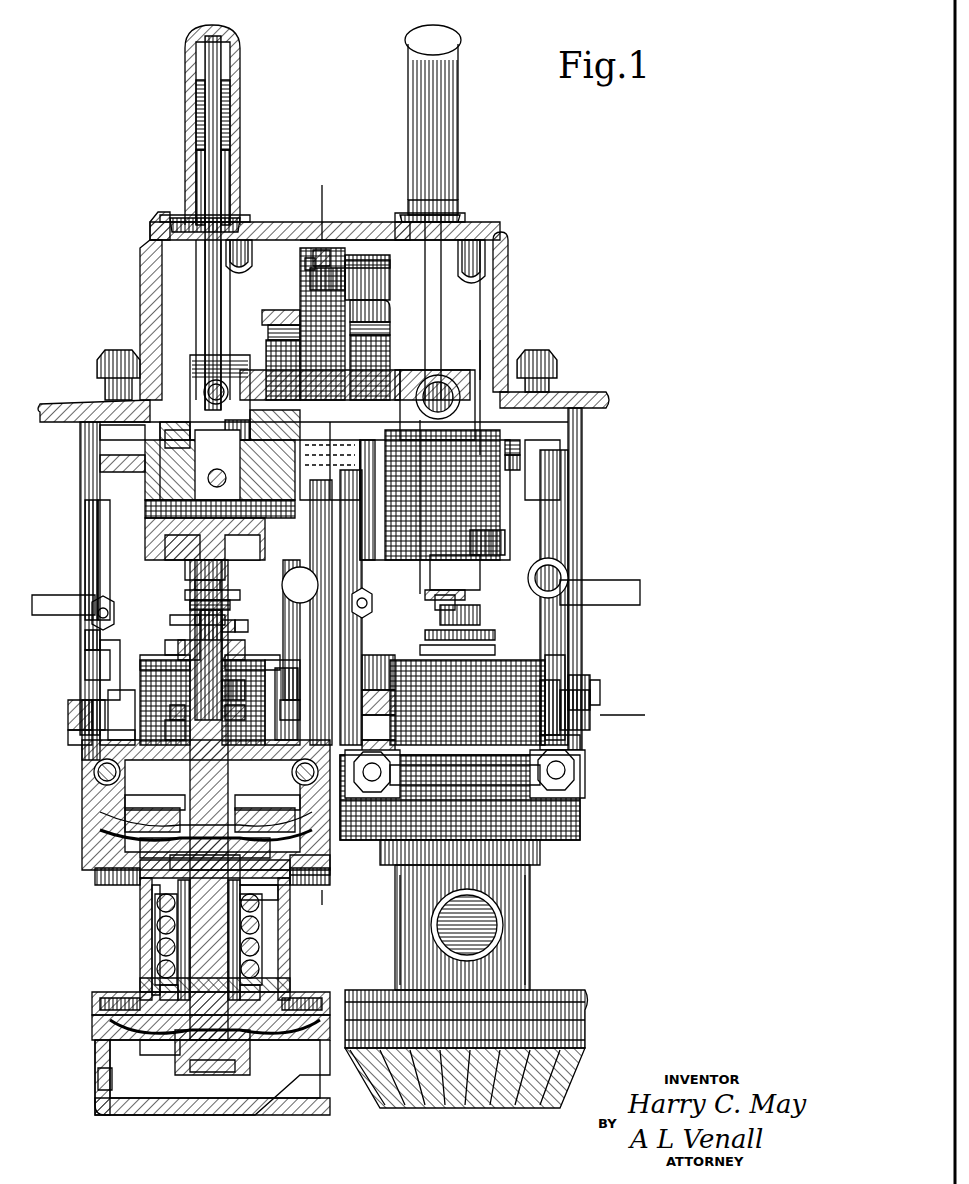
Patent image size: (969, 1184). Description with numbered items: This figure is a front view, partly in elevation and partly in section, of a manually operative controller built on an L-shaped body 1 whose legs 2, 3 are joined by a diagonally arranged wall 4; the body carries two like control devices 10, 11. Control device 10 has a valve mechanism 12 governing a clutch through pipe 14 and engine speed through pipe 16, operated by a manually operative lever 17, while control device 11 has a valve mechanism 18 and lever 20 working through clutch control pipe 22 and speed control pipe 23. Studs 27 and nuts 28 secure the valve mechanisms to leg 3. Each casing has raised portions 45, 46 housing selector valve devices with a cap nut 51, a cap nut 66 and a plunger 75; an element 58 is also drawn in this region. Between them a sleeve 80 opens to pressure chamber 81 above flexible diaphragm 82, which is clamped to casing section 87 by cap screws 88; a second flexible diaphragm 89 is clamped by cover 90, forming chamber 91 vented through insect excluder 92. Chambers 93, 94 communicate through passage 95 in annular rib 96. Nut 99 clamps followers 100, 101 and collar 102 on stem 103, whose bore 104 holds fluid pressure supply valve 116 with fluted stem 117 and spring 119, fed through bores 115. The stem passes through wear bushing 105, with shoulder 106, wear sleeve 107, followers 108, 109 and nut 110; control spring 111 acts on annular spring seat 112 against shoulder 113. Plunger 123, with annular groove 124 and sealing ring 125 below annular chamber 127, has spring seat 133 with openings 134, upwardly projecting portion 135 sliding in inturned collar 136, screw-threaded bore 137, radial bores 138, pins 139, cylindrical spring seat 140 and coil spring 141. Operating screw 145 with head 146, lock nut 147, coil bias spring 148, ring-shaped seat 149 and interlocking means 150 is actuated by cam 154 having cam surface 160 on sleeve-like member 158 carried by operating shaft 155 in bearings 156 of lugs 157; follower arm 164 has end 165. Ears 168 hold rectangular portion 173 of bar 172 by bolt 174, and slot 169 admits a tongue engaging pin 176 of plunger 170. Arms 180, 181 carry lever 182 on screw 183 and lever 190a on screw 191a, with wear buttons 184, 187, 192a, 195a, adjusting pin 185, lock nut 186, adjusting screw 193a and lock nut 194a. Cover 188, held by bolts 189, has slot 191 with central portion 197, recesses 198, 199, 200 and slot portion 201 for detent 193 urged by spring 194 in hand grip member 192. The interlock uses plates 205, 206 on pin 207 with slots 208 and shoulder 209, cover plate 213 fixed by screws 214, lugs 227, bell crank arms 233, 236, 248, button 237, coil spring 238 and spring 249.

The body 1 is at (580, 442).
The leg 2 is at (305, 189).
The leg 3 is at (80, 440).
The diagonally arranged wall 4 is at (475, 344).
The control device 10 is at (100, 668).
The control device 11 is at (560, 662).
The valve mechanism 12 is at (84, 798).
The pipe 14 is at (50, 745).
The pipe 16 is at (32, 600).
The manually operative lever 17 is at (185, 38).
The valve mechanism 18 is at (565, 793).
The lever 20 is at (462, 44).
The clutch control pipe 22 is at (648, 728).
The speed control pipe 23 is at (640, 588).
The stud 27 is at (372, 778).
The nut 28 is at (384, 772).
The raised portion 45 is at (90, 640).
The raised portion 46 is at (500, 665).
The cap nut 51 is at (385, 720).
The bolt hole 58 is at (100, 785).
The cap nut 66 is at (118, 698).
The plunger 75 is at (540, 712).
The sleeve 80 is at (240, 662).
The pressure chamber 81 is at (120, 808).
The flexible diaphragm 82 is at (120, 828).
The casing section 87 is at (140, 910).
The cap screw 88 is at (110, 870).
The flexible diaphragm 89 is at (100, 1036).
The cover 90 is at (178, 1112).
The chamber 91 is at (200, 1098).
The insect excluder 92 is at (100, 1078).
The chamber 93 is at (100, 1012).
The chamber 94 is at (160, 968).
The passage 95 is at (140, 985).
The annular rib 96 is at (262, 990).
The nut 99 is at (240, 820).
The follower 100 is at (172, 820).
The follower 101 is at (150, 845).
The collar 102 is at (180, 858).
The stem 103 is at (160, 940).
The bore 104 is at (150, 870).
The wear bushing 105 is at (262, 968).
The shoulder 106 is at (205, 966).
The wear sleeve 107 is at (252, 960).
The follower 108 is at (170, 1048).
The follower 109 is at (172, 1060).
The nut 110 is at (230, 1065).
The control spring 111 is at (210, 984).
The annular spring seat 112 is at (258, 880).
The shoulder 113 is at (165, 915).
The bore 115 is at (190, 900).
The fluid pressure supply valve 116 is at (262, 905).
The fluted stem 117 is at (292, 862).
The spring 119 is at (212, 950).
The plunger 123 is at (180, 698).
The annular groove 124 is at (182, 728).
The sealing ring 125 is at (185, 710).
The annular chamber 127 is at (170, 662).
The spring seat 133 is at (288, 706).
The opening 134 is at (290, 690).
The upwardly projecting portion 135 is at (240, 630).
The inturned collar 136 is at (228, 642).
The screw-threaded bore 137 is at (225, 610).
The radial bore 138 is at (172, 645).
The pin 139 is at (178, 648).
The cylindrical spring seat 140 is at (226, 625).
The coil spring 141 is at (228, 680).
The operating screw 145 is at (190, 585).
The head 146 is at (212, 585).
The lock nut 147 is at (185, 598).
The coil bias spring 148 is at (430, 655).
The ring-shaped seat 149 is at (172, 620).
The interlocking means 150 is at (195, 620).
The cam 154 is at (170, 556).
The operating shaft 155 is at (160, 440).
The bearing 156 is at (165, 420).
The lug 157 is at (400, 530).
The sleeve-like member 158 is at (256, 435).
The cam surface 160 is at (500, 540).
The follower arm 164 is at (460, 580).
The end 165 is at (215, 575).
The ear 168 is at (425, 425).
The slot 169 is at (190, 430).
The plunger 170 is at (160, 462).
The bar 172 is at (142, 270).
The rectangular portion 173 is at (200, 365).
The bolt 174 is at (205, 386).
The pin 176 is at (215, 475).
The arm 180 is at (95, 660).
The arm 181 is at (320, 555).
The lever 182 is at (370, 485).
The screw 183 is at (92, 610).
The wear button 184 is at (96, 512).
The adjusting pin 185 is at (78, 705).
The lock nut 186 is at (98, 700).
The wear button 187 is at (385, 740).
The cover 188 is at (508, 298).
The bolt 189 is at (118, 355).
The lever 190a is at (345, 505).
The slot 191 is at (310, 560).
The screw 191a is at (560, 575).
The hand grip member 192 is at (238, 45).
The wear button 192a is at (300, 440).
The detent 193 is at (232, 170).
The adjusting screw 193a is at (595, 700).
The spring 194 is at (232, 122).
The lock nut 194a is at (590, 680).
The wear button 195a is at (540, 730).
The central portion 197 is at (150, 228).
The recess 198 is at (185, 218).
The recess 199 is at (256, 232).
The recess 200 is at (168, 215).
The slot portion 201 is at (248, 230).
The plate 205 is at (312, 268).
The plate 206 is at (315, 258).
The pin 207 is at (350, 262).
The slot 208 is at (360, 240).
The shoulder 209 is at (312, 285).
The cover plate 213 is at (345, 398).
The screw 214 is at (420, 360).
The lug 227 is at (270, 328).
The arm 233 is at (370, 262).
The arm 236 is at (375, 315).
The button 237 is at (375, 330).
The coil spring 238 is at (378, 352).
The arm 248 is at (275, 318).
The spring 249 is at (272, 350).